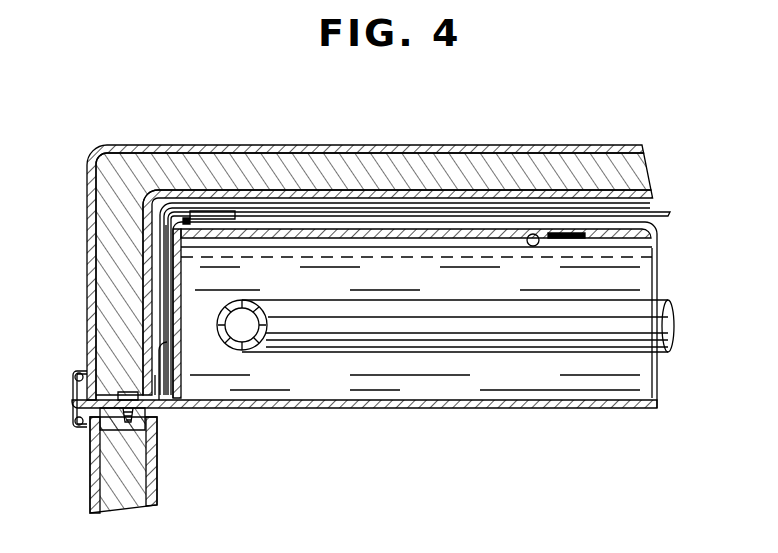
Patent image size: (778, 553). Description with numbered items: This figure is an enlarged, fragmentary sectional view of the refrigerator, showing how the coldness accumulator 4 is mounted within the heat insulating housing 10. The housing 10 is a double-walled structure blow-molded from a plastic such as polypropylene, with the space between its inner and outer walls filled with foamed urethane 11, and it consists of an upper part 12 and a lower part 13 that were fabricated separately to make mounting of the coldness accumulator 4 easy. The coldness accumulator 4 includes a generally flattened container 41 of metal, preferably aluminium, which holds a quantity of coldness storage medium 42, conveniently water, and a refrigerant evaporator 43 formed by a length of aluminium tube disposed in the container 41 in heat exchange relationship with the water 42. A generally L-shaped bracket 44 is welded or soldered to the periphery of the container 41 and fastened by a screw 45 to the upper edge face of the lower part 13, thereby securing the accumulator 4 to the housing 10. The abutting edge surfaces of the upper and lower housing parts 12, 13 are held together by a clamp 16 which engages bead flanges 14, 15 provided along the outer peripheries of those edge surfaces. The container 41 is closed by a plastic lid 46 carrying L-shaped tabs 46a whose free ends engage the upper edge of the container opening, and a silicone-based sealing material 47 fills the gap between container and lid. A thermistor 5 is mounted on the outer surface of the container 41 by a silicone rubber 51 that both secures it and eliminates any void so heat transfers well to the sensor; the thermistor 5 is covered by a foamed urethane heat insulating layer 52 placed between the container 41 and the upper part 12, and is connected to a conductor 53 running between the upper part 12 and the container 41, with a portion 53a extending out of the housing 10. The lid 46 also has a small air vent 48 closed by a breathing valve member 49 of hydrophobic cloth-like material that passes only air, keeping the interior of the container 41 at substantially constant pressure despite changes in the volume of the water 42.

The coldness accumulator 4 is at (446, 409).
The thermistor 5 is at (166, 300).
The heat insulating housing 10 is at (422, 194).
The heat insulating material 11 is at (357, 172).
The upper part of housing 12 is at (313, 150).
The lower part of housing 13 is at (88, 480).
The bead flange 14 is at (74, 378).
The bead flange 15 is at (74, 422).
The clamp 16 is at (72, 402).
The container 41 is at (386, 407).
The coldness storage medium 42 is at (512, 385).
The refrigerant evaporator 43 is at (664, 306).
The L-shaped bracket 44 is at (177, 406).
The screw 45 is at (160, 356).
The lid 46 is at (626, 233).
The L-shaped tab 46a is at (238, 214).
The sealing material 47 is at (186, 216).
The air vent 48 is at (566, 233).
The breathing valve member 49 is at (532, 236).
The silicone rubber 51 is at (176, 326).
The heat insulating layer 52 is at (163, 246).
The conductor 53 is at (165, 226).
The portion of conductor 53a is at (667, 214).